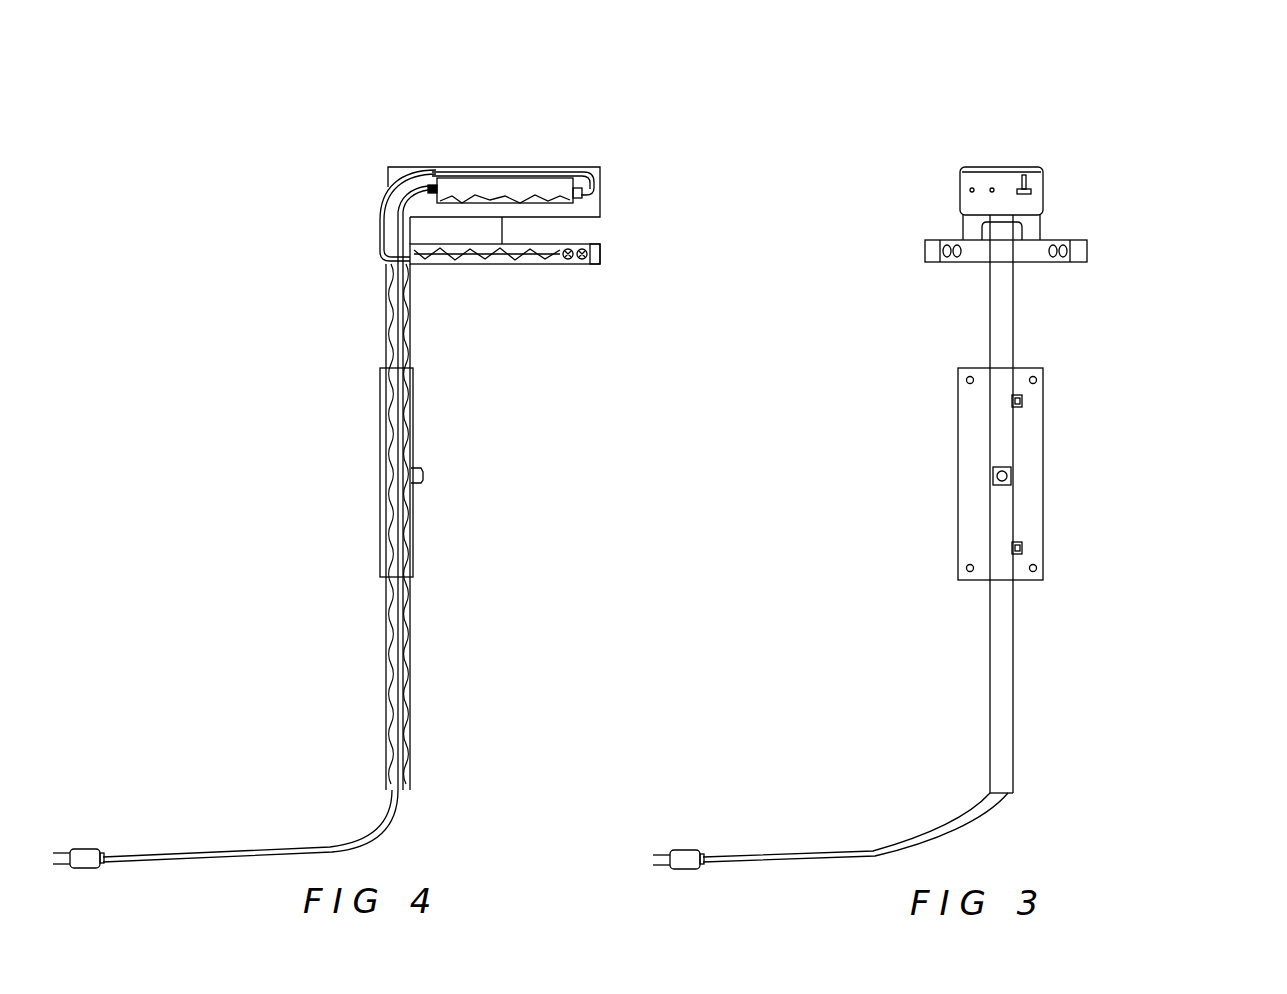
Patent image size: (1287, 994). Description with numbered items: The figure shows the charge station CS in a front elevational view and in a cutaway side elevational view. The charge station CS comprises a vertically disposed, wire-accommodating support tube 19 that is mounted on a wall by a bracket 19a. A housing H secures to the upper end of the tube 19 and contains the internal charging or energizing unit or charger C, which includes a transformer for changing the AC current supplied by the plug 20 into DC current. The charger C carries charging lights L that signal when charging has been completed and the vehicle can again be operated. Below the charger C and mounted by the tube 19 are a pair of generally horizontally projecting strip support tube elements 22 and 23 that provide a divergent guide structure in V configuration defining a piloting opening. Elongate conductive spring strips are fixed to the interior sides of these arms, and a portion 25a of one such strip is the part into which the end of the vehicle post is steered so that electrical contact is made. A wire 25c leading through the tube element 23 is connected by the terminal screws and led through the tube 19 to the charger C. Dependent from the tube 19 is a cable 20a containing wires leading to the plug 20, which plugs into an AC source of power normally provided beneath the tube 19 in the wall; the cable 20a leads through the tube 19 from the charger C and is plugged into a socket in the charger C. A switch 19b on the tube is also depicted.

In FIG. 4, the support tube 19 is at (410, 620).
In FIG. 3, the support tube 19 is at (1015, 333).
In FIG. 4, the bracket 19a is at (418, 548).
In FIG. 3, the bracket 19a is at (1045, 407).
In FIG. 4, the switch 19b is at (430, 477).
In FIG. 3, the switch 19b is at (1002, 465).
In FIG. 4, the plug 20 is at (95, 848).
In FIG. 3, the plug 20 is at (695, 850).
In FIG. 4, the cable 20a is at (430, 172).
In FIG. 3, the cable 20a is at (950, 828).
In FIG. 4, the strip support tube element 22 is at (540, 265).
In FIG. 3, the strip support tube element 22 is at (973, 253).
In FIG. 3, the strip support tube element 23 is at (1040, 250).
In FIG. 4, the portion of conductive strip 25a is at (510, 266).
In FIG. 4, the wire 25c is at (605, 183).
In FIG. 4, the housing H is at (605, 172).
In FIG. 3, the housing H is at (1047, 170).
In FIG. 3, the charging lights L is at (988, 186).
In FIG. 3, the charger C is at (1036, 200).
In FIG. 4, the charge station CS is at (430, 426).